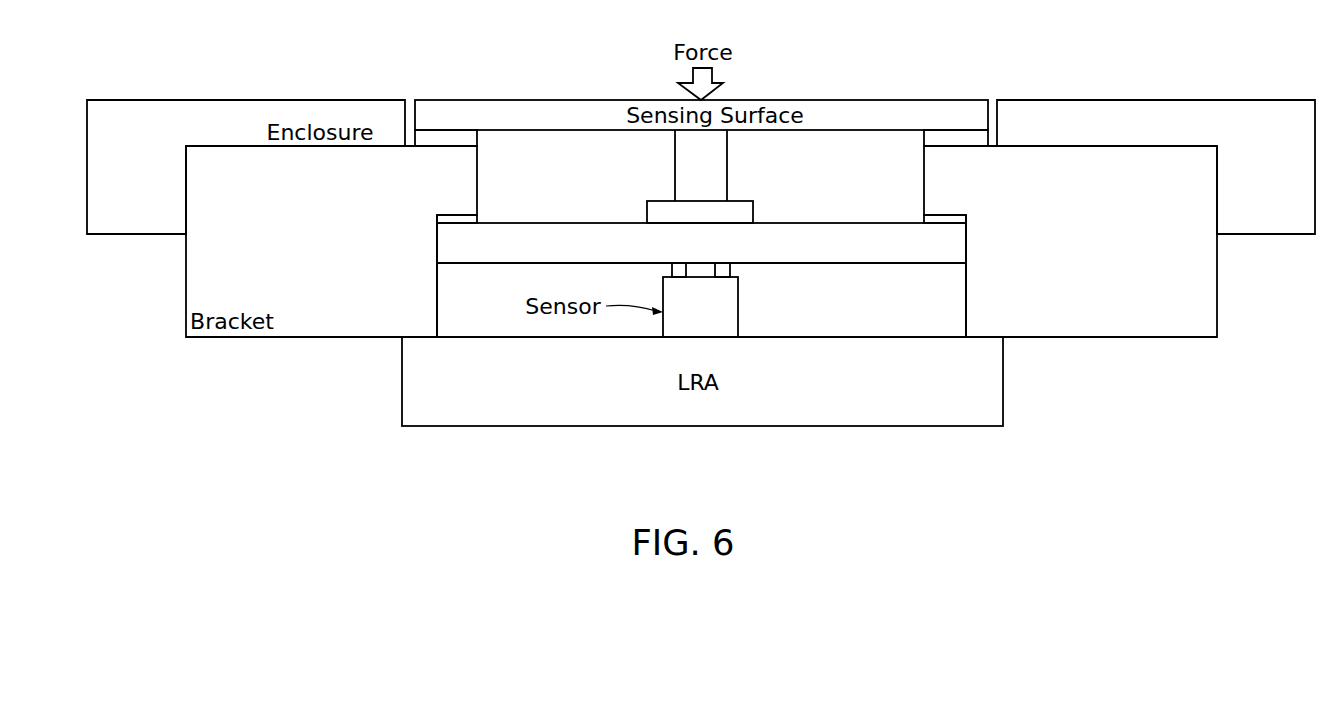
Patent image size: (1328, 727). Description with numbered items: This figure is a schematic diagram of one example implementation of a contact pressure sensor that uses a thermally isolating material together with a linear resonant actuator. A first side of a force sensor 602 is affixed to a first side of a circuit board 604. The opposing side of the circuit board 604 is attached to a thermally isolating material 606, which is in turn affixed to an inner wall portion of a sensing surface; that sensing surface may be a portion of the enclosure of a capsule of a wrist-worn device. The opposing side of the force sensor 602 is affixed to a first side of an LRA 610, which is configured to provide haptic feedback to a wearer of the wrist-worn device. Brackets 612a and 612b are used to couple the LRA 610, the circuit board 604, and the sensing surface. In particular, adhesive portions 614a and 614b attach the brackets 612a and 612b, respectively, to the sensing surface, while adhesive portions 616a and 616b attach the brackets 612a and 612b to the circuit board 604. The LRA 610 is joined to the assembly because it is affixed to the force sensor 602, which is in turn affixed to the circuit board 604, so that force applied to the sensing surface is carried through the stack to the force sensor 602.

The force sensor 602 is at (734, 313).
The circuit board 604 is at (460, 253).
The thermally isolating material 606 is at (658, 198).
The LRA 610 is at (700, 427).
The bracket 612a is at (310, 338).
The bracket 612b is at (1132, 338).
The adhesive portion 614a is at (447, 138).
The adhesive portion 614b is at (953, 138).
The adhesive portion 616a is at (477, 221).
The adhesive portion 616b is at (924, 221).